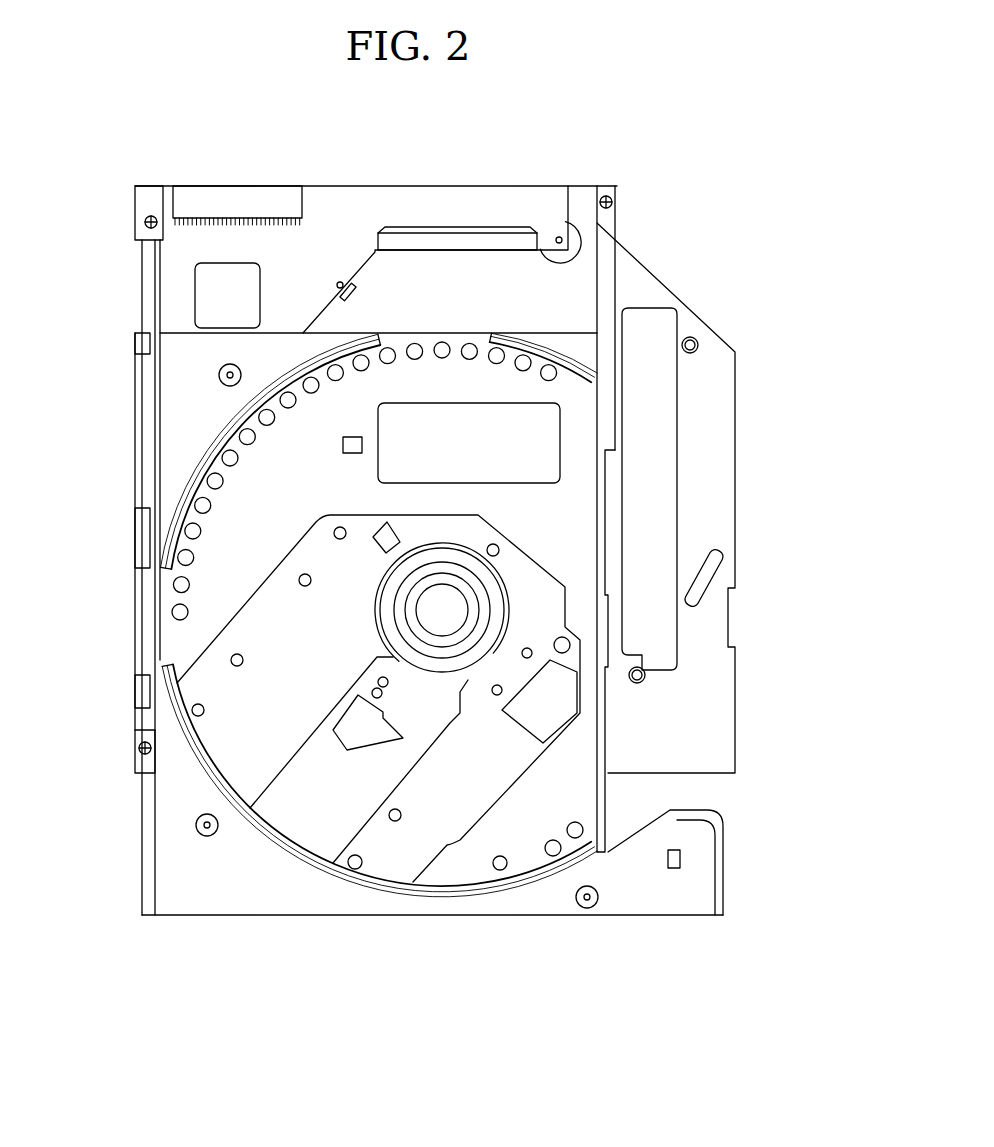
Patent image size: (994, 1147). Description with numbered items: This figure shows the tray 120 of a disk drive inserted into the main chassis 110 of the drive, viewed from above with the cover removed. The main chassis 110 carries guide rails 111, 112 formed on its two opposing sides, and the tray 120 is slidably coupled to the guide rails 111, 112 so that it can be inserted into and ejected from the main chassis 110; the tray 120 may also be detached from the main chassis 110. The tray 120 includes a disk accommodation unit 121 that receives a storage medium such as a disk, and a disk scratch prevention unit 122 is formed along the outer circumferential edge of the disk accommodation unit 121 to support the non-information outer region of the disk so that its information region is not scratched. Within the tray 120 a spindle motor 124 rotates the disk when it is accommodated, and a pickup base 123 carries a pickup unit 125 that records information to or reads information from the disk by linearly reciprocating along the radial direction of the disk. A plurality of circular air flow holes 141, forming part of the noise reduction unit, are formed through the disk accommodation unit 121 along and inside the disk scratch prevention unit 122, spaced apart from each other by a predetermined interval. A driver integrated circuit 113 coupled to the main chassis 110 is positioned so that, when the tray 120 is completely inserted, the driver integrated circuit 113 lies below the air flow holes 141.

The main chassis 110 is at (740, 476).
The guide rail 111 is at (152, 411).
The guide rail 112 is at (605, 362).
The driver integrated circuit 113 is at (332, 243).
The tray 120 is at (693, 933).
The disk accommodation unit 121 is at (225, 577).
The disk scratch prevention unit 122 is at (197, 470).
The pickup base 123 is at (235, 757).
The spindle motor 124 is at (443, 622).
The pickup unit 125 is at (372, 730).
The air flow holes 141 is at (549, 372).